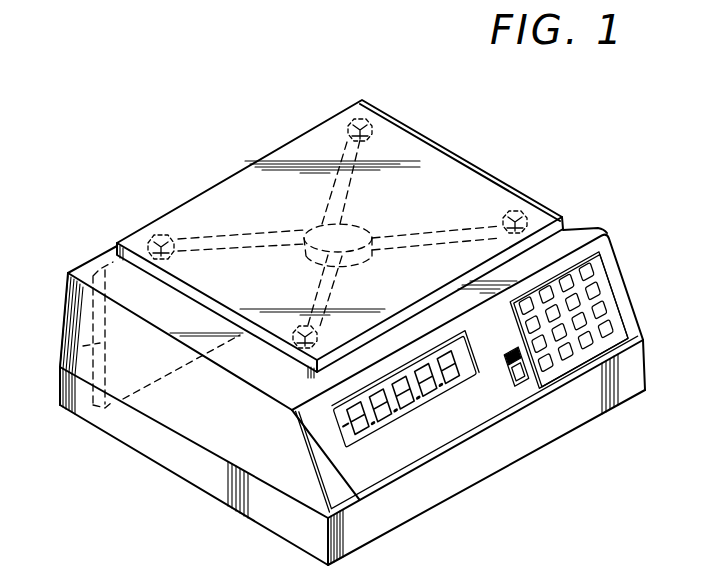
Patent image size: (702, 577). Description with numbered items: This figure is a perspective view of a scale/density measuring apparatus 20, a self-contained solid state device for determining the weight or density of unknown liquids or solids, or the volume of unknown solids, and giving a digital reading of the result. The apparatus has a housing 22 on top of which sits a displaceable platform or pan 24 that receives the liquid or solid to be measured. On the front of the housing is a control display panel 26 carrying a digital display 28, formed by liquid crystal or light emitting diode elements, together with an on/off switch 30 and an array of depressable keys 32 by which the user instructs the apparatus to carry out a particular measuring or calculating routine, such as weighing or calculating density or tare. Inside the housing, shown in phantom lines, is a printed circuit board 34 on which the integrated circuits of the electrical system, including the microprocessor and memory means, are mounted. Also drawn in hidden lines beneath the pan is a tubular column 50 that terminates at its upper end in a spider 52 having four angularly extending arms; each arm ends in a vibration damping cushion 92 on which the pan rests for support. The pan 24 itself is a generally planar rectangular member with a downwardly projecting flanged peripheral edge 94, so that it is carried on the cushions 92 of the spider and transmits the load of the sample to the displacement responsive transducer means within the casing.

The scale/density measuring apparatus 20 is at (336, 329).
The housing 22 is at (480, 358).
The platform or pan 24 is at (340, 234).
The control display panel 26 is at (405, 436).
The digital display 28 is at (427, 389).
The on/off switch 30 is at (503, 362).
The keys 32 is at (590, 312).
The printed circuit board 34 is at (84, 345).
The tubular column 50 is at (372, 224).
The spider 52 is at (420, 262).
The vibration damping cushion 92 is at (364, 100).
The flanged peripheral edge 94 is at (268, 344).